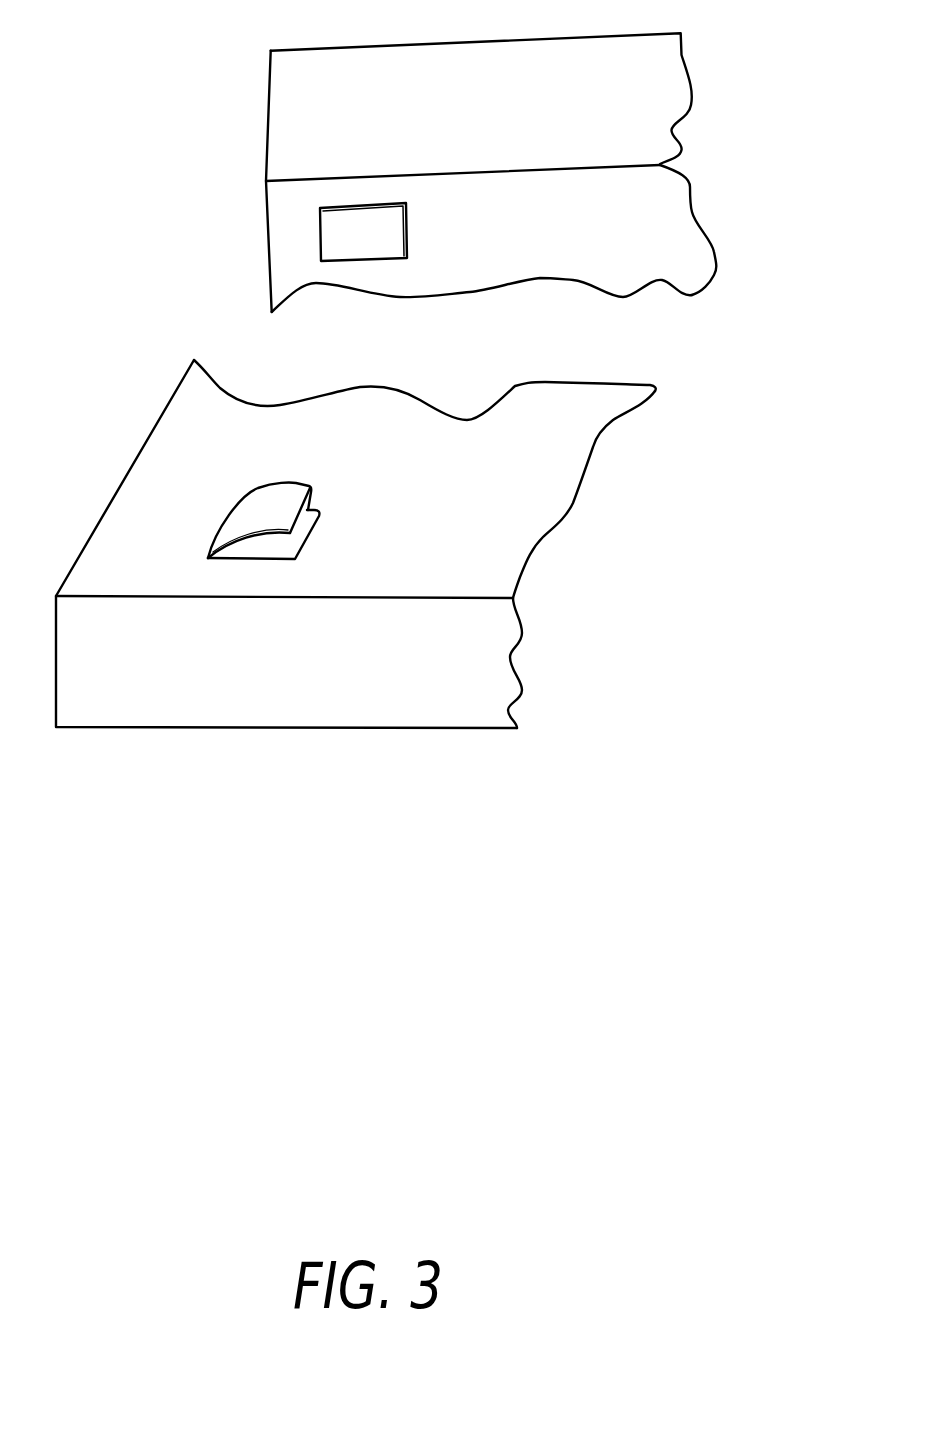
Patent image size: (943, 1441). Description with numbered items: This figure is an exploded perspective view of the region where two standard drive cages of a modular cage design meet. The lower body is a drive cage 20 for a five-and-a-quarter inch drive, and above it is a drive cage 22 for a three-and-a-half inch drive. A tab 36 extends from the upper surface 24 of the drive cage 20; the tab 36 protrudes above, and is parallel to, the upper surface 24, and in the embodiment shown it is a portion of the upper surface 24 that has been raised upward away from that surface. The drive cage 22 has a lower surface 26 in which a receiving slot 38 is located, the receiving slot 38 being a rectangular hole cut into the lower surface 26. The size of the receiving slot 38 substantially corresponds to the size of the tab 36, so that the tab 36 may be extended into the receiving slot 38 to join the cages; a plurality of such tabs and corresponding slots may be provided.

The drive cage 20 is at (548, 663).
The drive cage 22 is at (710, 80).
The upper surface 24 is at (535, 488).
The lower surface 26 is at (623, 238).
The tab 36 is at (260, 517).
The receiving slot 38 is at (348, 235).